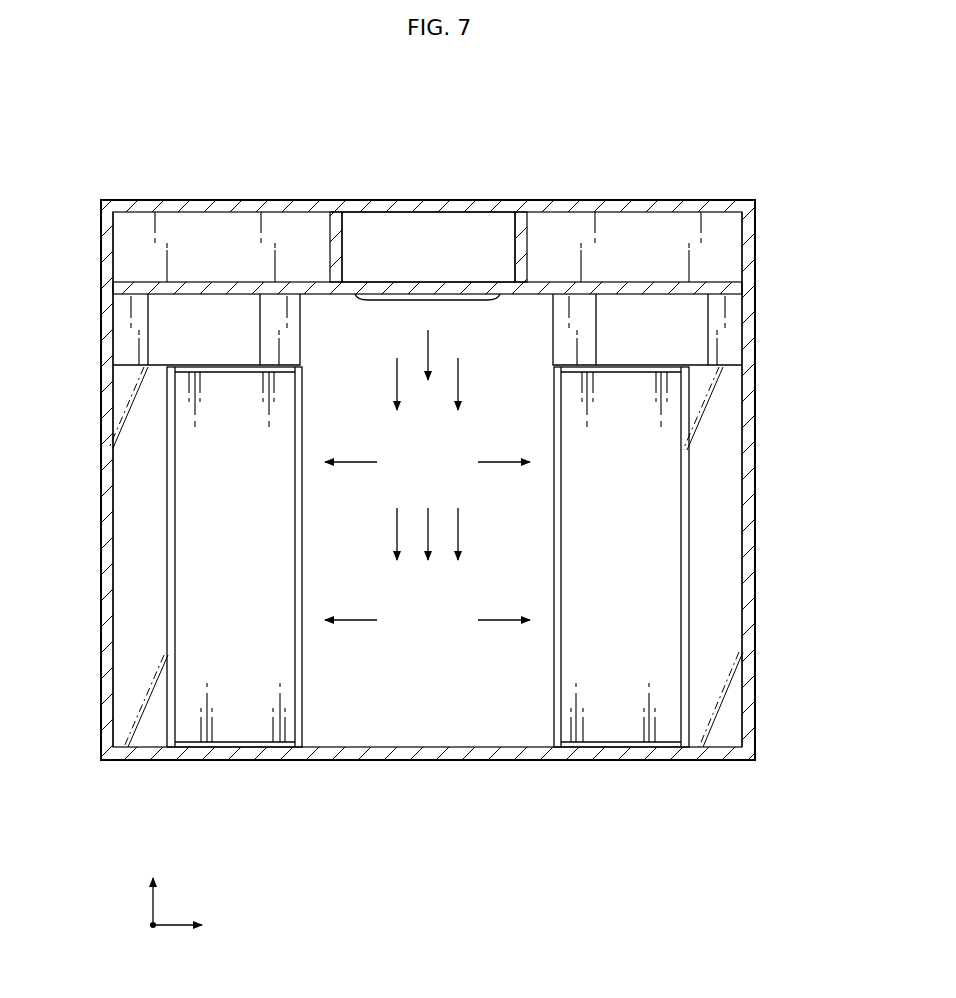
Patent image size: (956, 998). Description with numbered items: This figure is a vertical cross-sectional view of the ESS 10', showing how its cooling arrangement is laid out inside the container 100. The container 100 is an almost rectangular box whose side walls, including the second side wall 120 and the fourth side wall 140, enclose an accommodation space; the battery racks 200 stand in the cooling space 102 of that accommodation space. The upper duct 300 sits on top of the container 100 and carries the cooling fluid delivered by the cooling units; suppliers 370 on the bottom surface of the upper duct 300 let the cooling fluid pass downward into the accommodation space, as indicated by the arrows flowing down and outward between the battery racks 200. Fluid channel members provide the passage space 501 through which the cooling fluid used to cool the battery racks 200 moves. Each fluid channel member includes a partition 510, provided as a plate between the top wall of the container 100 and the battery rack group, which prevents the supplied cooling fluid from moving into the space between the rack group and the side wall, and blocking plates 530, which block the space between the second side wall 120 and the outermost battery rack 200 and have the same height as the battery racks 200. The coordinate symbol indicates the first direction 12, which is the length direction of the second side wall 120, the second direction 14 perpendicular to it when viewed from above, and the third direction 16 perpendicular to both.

The ESS 10' is at (439, 526).
The container 100 is at (783, 267).
The cooling space 102 is at (404, 686).
The second side wall 120 is at (755, 522).
The fourth side wall 140 is at (101, 522).
The battery racks 200 is at (245, 707).
The upper duct 300 is at (435, 176).
The suppliers 370 is at (455, 302).
The passage space 501 is at (211, 331).
The partition 510 is at (302, 343).
The blocking plates 530 is at (135, 612).
The first direction 12 is at (152, 927).
The second direction 14 is at (198, 927).
The third direction 16 is at (154, 881).